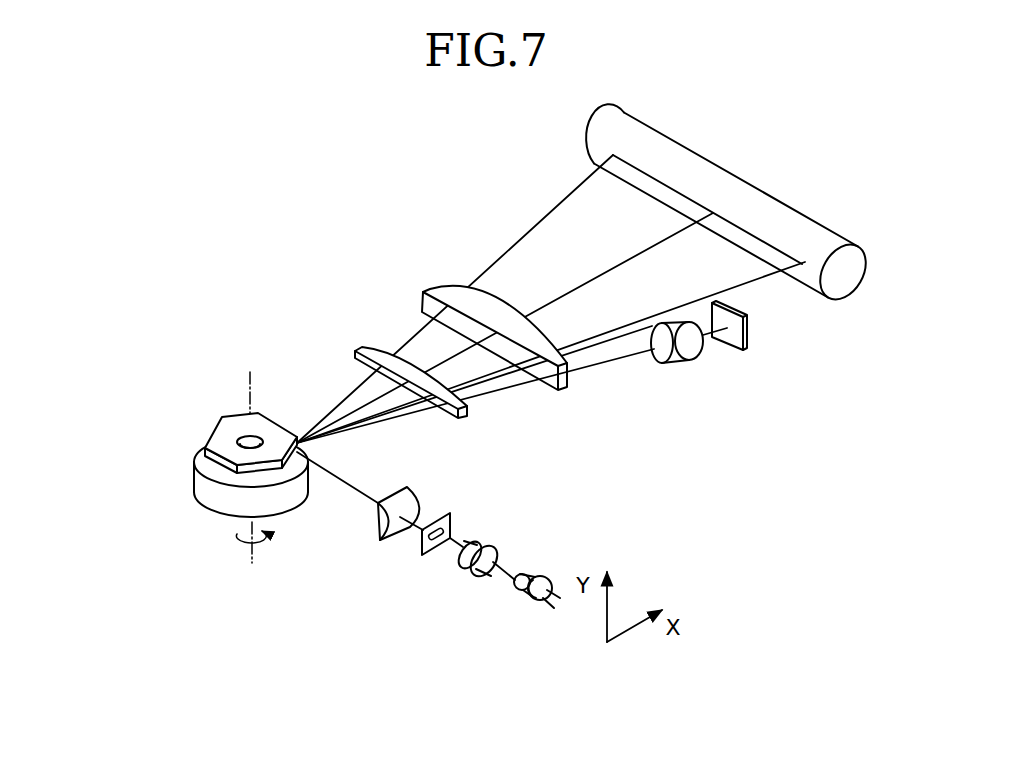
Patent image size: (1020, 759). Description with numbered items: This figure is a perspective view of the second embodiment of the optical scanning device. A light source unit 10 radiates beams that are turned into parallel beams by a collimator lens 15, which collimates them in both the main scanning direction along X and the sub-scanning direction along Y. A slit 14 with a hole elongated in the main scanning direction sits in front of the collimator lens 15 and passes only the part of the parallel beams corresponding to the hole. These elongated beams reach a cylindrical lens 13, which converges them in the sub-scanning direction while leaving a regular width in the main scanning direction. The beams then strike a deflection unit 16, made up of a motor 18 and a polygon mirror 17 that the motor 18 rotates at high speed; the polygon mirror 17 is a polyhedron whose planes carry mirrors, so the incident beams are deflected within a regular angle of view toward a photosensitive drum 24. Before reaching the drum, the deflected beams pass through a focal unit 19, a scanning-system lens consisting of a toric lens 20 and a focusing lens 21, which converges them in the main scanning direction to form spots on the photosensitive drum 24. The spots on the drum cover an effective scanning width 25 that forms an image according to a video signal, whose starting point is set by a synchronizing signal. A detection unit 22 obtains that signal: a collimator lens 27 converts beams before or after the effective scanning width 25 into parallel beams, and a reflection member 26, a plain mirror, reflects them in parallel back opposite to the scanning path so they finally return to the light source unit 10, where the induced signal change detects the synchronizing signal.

The light source unit 10 is at (515, 588).
The cylindrical lens 13 is at (503, 556).
The slit 14 is at (451, 525).
The collimator lens 15 is at (403, 520).
The deflection unit 16 is at (190, 479).
The polygon mirror 17 is at (225, 432).
The motor 18 is at (220, 502).
The focal unit 19 is at (434, 306).
The toric lens 20 is at (373, 347).
The focusing lens 21 is at (449, 292).
The detection unit 22 is at (752, 378).
The photosensitive drum 24 is at (758, 210).
The effective scanning width 25 is at (663, 180).
The reflection member 26 is at (750, 330).
The collimator lens 27 is at (662, 363).